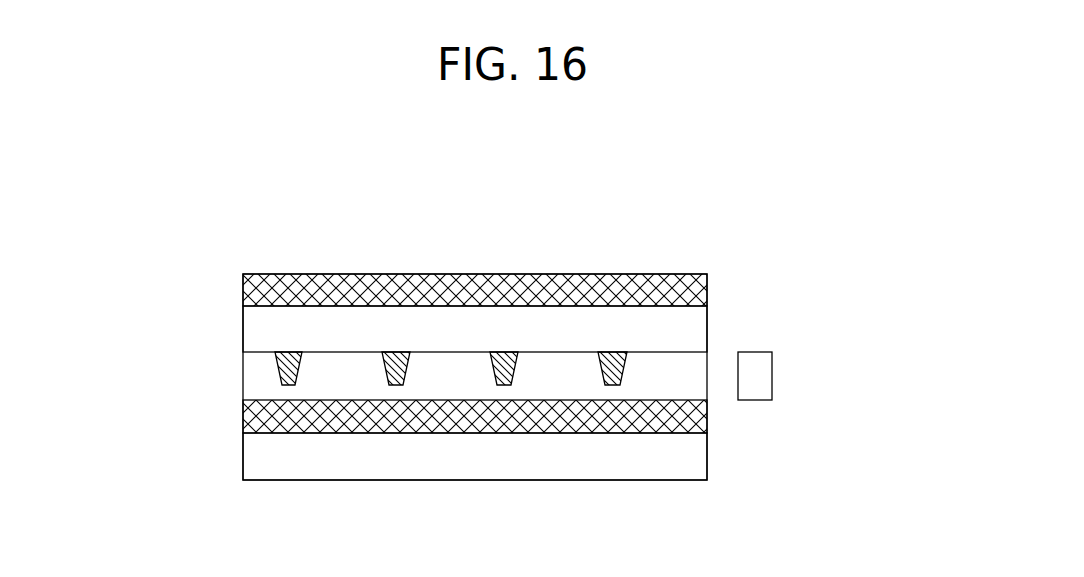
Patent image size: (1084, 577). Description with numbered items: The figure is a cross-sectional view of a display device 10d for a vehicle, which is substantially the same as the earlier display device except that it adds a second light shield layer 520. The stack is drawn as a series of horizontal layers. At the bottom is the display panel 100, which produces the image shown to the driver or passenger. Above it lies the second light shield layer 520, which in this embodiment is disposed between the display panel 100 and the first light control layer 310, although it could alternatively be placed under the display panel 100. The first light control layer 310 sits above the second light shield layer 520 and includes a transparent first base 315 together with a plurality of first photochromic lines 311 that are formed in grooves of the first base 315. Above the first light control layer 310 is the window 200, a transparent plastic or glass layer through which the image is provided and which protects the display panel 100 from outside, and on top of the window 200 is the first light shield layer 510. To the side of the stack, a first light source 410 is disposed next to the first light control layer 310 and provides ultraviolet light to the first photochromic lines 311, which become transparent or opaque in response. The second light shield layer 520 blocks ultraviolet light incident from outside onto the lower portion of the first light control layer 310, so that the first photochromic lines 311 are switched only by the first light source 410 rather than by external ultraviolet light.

The display device 10d is at (722, 238).
The display panel 100 is at (250, 457).
The window 200 is at (250, 337).
The first light control layer 310 is at (451, 286).
The first photochromic lines 311 is at (397, 352).
The first base 315 is at (455, 366).
The first light source 410 is at (764, 376).
The first light shield layer 510 is at (250, 290).
The second light shield layer 520 is at (250, 417).